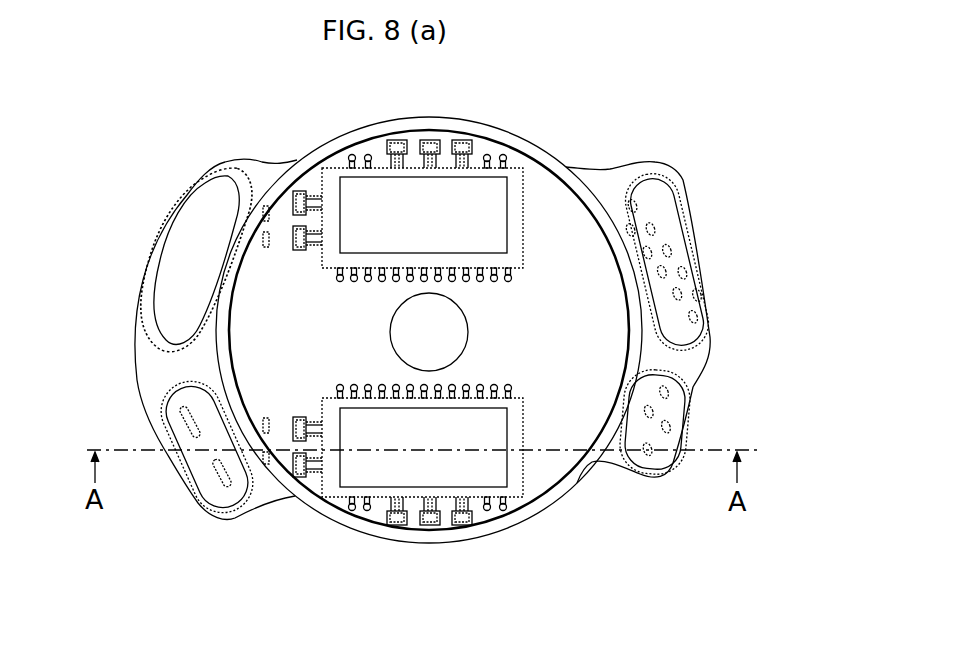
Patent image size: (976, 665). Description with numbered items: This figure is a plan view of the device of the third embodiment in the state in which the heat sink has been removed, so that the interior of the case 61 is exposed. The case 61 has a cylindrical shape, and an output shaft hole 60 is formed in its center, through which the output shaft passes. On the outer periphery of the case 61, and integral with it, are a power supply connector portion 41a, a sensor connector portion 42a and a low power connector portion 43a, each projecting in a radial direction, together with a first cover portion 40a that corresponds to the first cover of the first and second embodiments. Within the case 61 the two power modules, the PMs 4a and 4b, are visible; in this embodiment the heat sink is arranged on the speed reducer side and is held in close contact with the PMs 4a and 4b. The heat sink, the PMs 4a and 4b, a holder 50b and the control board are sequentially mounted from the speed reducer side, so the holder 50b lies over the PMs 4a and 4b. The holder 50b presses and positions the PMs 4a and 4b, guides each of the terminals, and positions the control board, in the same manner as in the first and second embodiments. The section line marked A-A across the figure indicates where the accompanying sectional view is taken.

The PM 4a is at (323, 170).
The PM 4b is at (523, 493).
The case 61 is at (525, 142).
The holder 50b is at (240, 353).
The output shaft hole 60 is at (413, 358).
The first cover portion 40a is at (210, 186).
The power supply connector portion 41a is at (203, 507).
The sensor connector portion 42a is at (703, 300).
The low power connector portion 43a is at (687, 417).